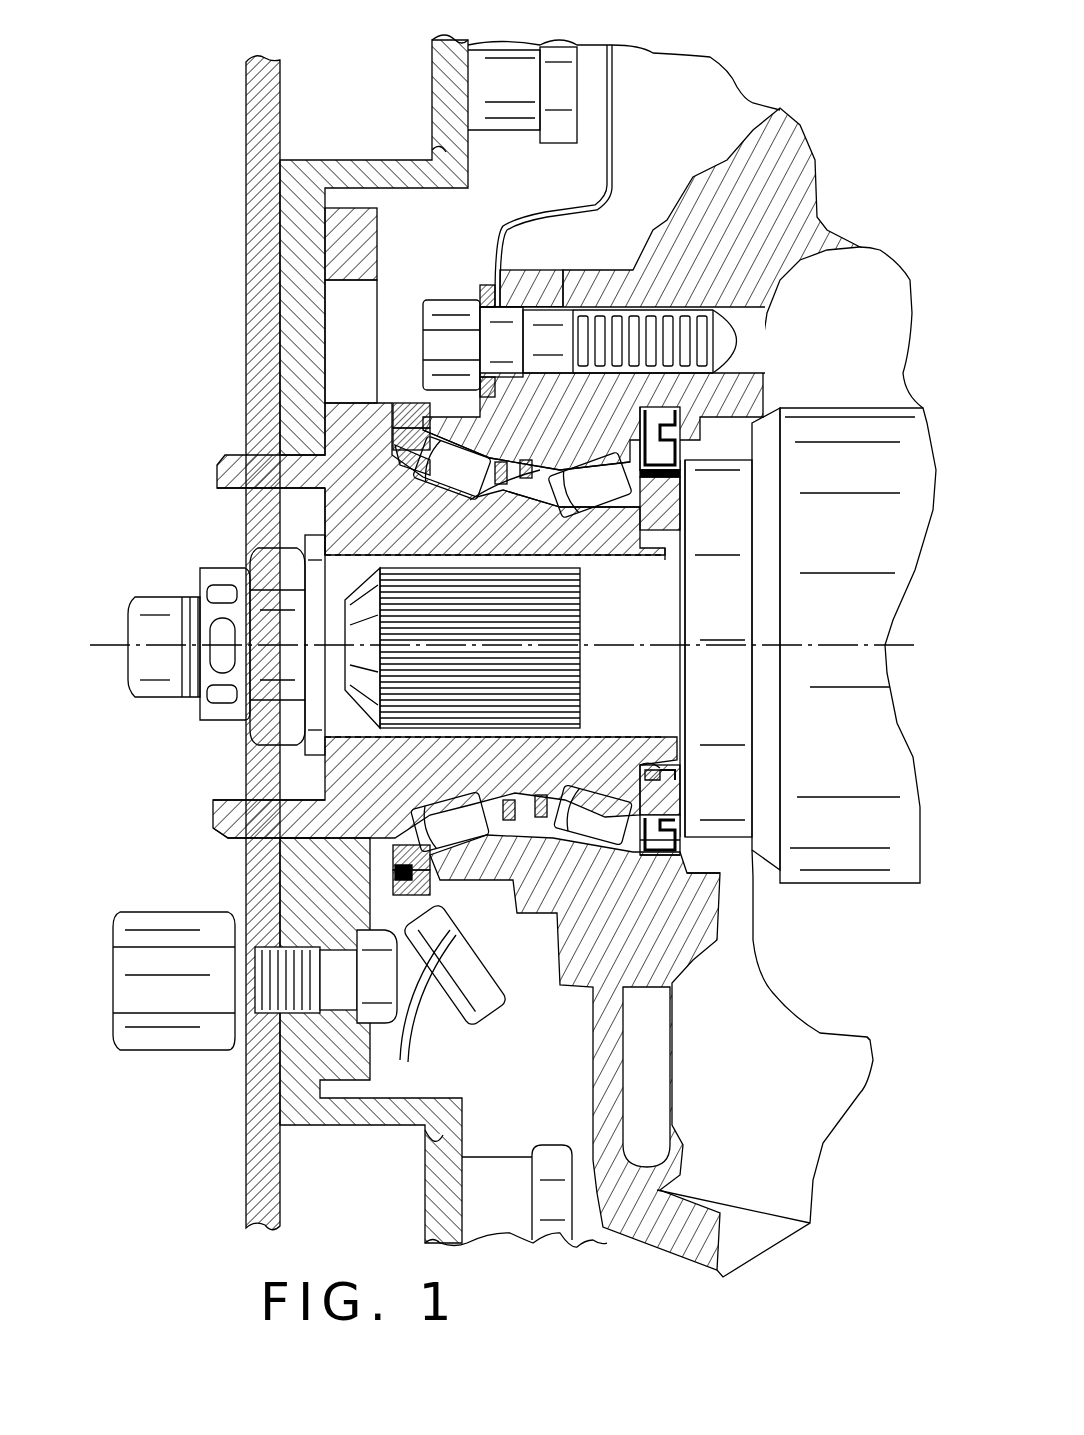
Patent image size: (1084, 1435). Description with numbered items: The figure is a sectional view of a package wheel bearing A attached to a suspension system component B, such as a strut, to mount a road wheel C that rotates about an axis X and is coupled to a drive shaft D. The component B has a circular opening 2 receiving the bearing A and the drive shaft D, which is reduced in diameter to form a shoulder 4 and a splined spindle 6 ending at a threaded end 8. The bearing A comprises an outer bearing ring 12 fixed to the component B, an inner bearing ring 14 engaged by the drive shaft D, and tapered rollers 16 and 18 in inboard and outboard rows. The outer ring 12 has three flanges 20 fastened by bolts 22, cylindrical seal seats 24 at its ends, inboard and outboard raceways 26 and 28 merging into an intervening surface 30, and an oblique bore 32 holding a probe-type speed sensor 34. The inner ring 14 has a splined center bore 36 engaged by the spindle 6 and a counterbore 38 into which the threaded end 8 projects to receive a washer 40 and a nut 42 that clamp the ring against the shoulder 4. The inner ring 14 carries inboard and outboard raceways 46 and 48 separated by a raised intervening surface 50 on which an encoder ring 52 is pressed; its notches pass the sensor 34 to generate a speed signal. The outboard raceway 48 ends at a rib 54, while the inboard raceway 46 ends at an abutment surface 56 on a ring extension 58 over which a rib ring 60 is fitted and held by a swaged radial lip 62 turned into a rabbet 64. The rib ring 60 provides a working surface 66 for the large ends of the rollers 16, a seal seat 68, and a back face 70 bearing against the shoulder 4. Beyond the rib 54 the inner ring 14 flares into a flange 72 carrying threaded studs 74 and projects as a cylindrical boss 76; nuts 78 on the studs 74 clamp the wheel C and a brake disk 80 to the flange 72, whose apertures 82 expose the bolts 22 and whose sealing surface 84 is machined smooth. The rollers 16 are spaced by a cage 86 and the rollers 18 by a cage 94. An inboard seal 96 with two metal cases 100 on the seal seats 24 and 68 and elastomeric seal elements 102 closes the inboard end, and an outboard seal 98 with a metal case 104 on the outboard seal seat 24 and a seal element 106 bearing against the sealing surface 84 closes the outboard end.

The circular opening 2 is at (700, 940).
The shoulder 4 is at (668, 636).
The spindle 6 is at (667, 667).
The threaded end 8 is at (148, 680).
The outer bearing ring 12 is at (598, 312).
The inner bearing ring 14 is at (325, 800).
The tapered rollers 16 is at (680, 520).
The tapered rollers 18 is at (420, 483).
The flanges 20 is at (525, 290).
The bolts 22 is at (440, 300).
The seal seats 24 is at (700, 332).
The inboard raceway 26 is at (680, 480).
The outboard raceway 28 is at (425, 470).
The intervening surface 30 is at (535, 512).
The bore 32 is at (505, 915).
The speed sensor 34 is at (465, 970).
The center bore 36 is at (565, 683).
The counterbore 38 is at (250, 528).
The washer 40 is at (312, 740).
The nut 42 is at (265, 720).
The inboard raceway 46 is at (683, 490).
The outboard raceway 48 is at (475, 492).
The intervening surface 50 is at (585, 525).
The encoder ring 52 is at (560, 545).
The rib 54 is at (447, 1000).
The abutment surface 56 is at (650, 770).
The ring extension 58 is at (665, 760).
The rib ring 60 is at (680, 792).
The radial lip 62 is at (665, 775).
The rabbet 64 is at (670, 785).
The working surface 66 is at (530, 905).
The seal seat 68 is at (690, 837).
The back face 70 is at (690, 822).
The flange 72 is at (355, 242).
The threaded studs 74 is at (238, 1050).
The cylindrical boss 76 is at (215, 813).
The nuts 78 is at (165, 1035).
The brake disk 80 is at (432, 88).
The apertures 82 is at (348, 305).
The sealing surface 84 is at (400, 405).
The cage 86 is at (713, 870).
The cage 94 is at (398, 442).
The inboard seal 96 is at (660, 420).
The outboard seal 98 is at (400, 890).
The metal cases 100 is at (645, 412).
The elastomeric seal elements 102 is at (665, 442).
The metal case 104 is at (407, 893).
The seal element 106 is at (395, 860).
The package wheel bearing A is at (663, 560).
The suspension system component B is at (727, 163).
The road wheel C is at (246, 120).
The drive shaft D is at (857, 892).
The axis X is at (514, 645).